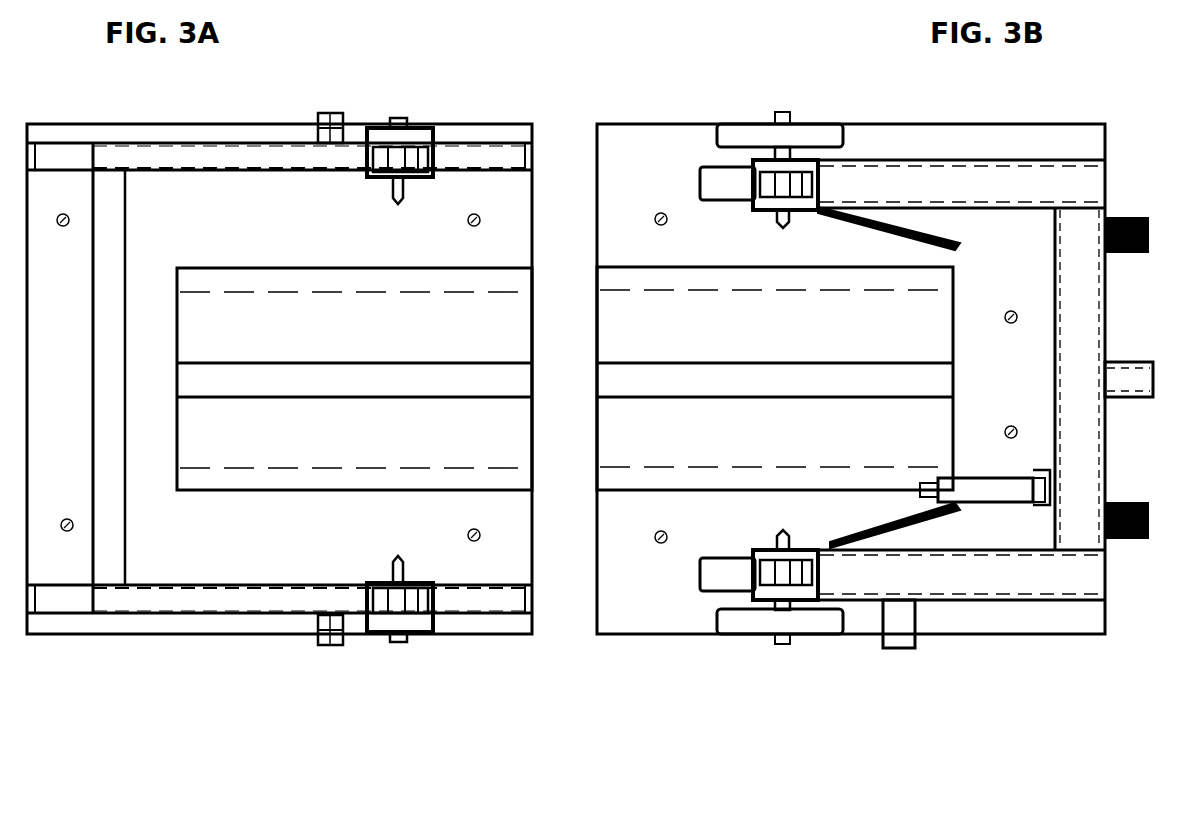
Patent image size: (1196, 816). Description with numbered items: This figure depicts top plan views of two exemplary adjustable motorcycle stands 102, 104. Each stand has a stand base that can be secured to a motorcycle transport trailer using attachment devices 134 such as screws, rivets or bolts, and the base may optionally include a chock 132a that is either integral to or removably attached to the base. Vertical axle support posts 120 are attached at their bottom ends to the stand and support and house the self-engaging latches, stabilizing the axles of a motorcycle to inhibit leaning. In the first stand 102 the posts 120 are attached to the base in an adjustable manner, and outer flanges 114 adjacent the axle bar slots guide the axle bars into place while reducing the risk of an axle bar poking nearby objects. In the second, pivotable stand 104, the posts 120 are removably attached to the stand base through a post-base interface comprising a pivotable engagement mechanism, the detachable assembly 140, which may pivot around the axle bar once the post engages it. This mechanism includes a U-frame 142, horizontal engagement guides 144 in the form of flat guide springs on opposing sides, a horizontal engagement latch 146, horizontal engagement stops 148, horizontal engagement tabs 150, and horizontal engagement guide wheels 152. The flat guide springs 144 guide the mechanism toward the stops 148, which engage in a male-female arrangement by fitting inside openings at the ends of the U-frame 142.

In FIG. 3A, the adjustable motorcycle stand 102 is at (76, 634).
In FIG. 3B, the pivotable, adjustable motorcycle stand 104 is at (1050, 634).
In FIG. 3A, the outer flanges 114 is at (413, 634).
In FIG. 3A, the vertical axle support post 120 is at (376, 128).
In FIG. 3A, the chock 132a is at (472, 310).
In FIG. 3B, the chock 132a is at (656, 446).
In FIG. 3A, the attachment devices 134 is at (555, 247).
In FIG. 3B, the attachment devices 134 is at (655, 219).
In FIG. 3B, the detachable assembly 140 is at (949, 129).
In FIG. 3B, the U-frame 142 is at (965, 180).
In FIG. 3B, the horizontal engagement guide 144 is at (950, 247).
In FIG. 3B, the horizontal engagement latch 146 is at (1036, 505).
In FIG. 3B, the horizontal engagement stop 148 is at (710, 178).
In FIG. 3B, the horizontal engagement tab 150 is at (1130, 218).
In FIG. 3B, the horizontal engagement guide wheel 152 is at (736, 130).